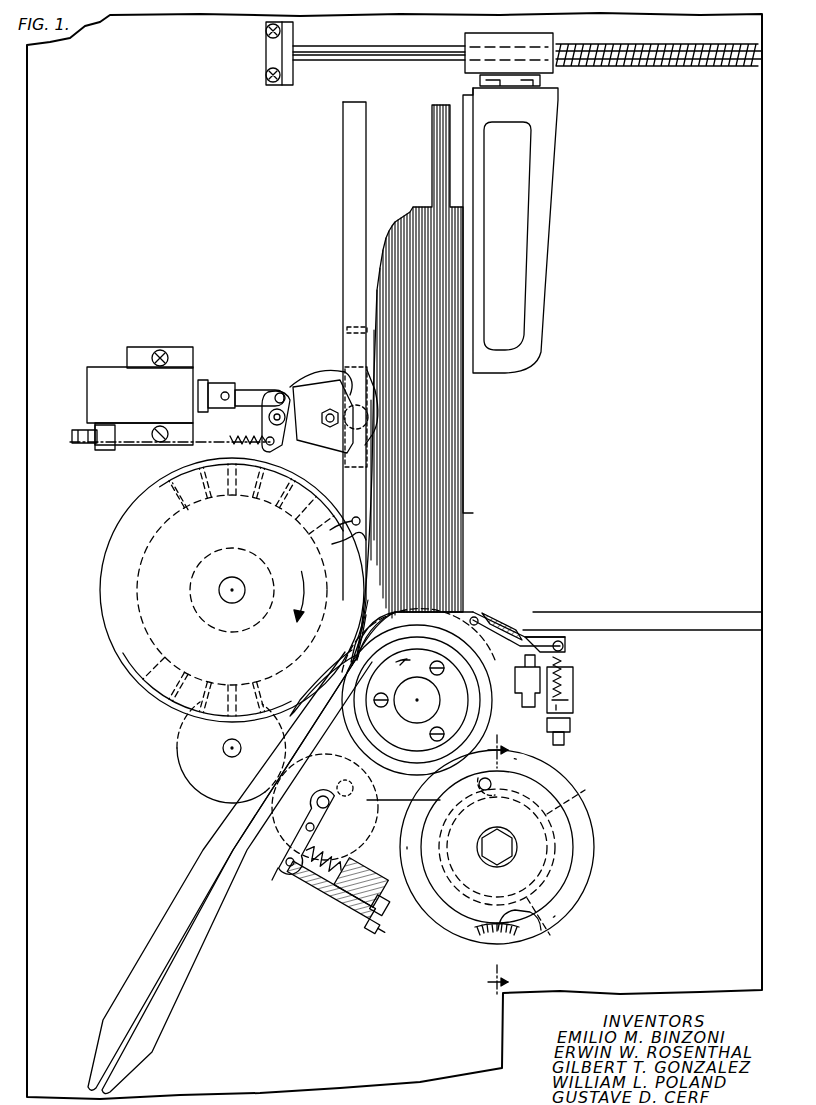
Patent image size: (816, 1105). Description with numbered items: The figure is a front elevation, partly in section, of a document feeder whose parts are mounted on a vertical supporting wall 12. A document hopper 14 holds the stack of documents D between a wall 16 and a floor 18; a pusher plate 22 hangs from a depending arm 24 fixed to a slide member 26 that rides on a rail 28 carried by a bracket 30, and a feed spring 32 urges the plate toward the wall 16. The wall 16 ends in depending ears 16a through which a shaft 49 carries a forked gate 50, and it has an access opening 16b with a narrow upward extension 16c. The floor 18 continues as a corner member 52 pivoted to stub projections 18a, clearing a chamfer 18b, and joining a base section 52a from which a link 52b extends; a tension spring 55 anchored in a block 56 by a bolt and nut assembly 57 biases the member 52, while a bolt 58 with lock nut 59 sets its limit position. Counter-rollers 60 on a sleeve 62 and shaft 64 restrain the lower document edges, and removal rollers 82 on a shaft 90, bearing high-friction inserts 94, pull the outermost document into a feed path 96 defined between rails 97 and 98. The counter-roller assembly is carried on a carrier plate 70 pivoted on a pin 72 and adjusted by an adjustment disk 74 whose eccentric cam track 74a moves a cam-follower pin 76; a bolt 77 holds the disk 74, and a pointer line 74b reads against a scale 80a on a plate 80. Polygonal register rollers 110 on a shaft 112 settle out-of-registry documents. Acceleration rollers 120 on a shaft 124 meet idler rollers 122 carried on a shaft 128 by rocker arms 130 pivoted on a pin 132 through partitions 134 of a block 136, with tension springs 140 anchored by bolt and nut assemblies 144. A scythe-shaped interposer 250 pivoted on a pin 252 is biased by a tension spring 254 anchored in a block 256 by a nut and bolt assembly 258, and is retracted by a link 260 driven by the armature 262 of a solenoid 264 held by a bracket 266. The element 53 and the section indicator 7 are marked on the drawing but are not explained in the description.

The supporting wall 12 is at (135, 95).
The document hopper 14 is at (340, 240).
The hopper wall 16 is at (343, 300).
The depending ears 16a is at (332, 544).
The access opening 16b is at (325, 410).
The upward extension of access opening 16c is at (347, 330).
The hopper floor 18 is at (688, 617).
The stub projections 18a is at (495, 622).
The chamfer of hopper floor 18b is at (530, 636).
The pusher plate 22 is at (462, 96).
The depending arm 24 is at (547, 153).
The slide member 26 is at (515, 32).
The rail 28 is at (412, 50).
The bracket 30 is at (266, 47).
The feed spring 32 is at (678, 44).
The shaft 49 is at (352, 522).
The forked gate 50 is at (305, 630).
The corner member 52 is at (430, 612).
The base section 52a is at (560, 637).
The link 52b is at (563, 646).
The pivot pin 53 is at (478, 618).
The tension spring 55 is at (565, 664).
The block 56 is at (574, 707).
The bolt and nut assembly 57 is at (566, 743).
The bolt 58 is at (572, 724).
The lock nut 59 is at (512, 684).
The counter-rollers 60 is at (490, 716).
The sleeve 62 is at (462, 668).
The rotatable shaft 64 is at (440, 706).
The carrier plate 70 is at (393, 802).
The pivot pin 72 is at (331, 810).
The adjustment disk 74 is at (594, 846).
The circular cam track 74a is at (590, 808).
The pointer line 74b is at (540, 932).
The cam-follower pin 76 is at (520, 782).
The bolt 77 is at (512, 848).
The plate 80 is at (580, 890).
The scale 80a is at (484, 935).
The removal rollers 82 is at (122, 520).
The rotatable shaft 90 is at (228, 602).
The friction inserts 94 is at (322, 500).
The feed path 96 is at (288, 740).
The rails 97 is at (182, 886).
The rails 98 is at (208, 957).
The polygonal register rollers 110 is at (336, 378).
The rotatable shaft 112 is at (326, 430).
The acceleration rollers 120 is at (200, 790).
The idler rollers 122 is at (385, 772).
The shaft 124 is at (224, 753).
The shaft 128 is at (352, 785).
The rocker arms 130 is at (340, 840).
The pin 132 is at (280, 872).
The partitions 134 is at (392, 905).
The block 136 is at (392, 898).
The tension springs 140 is at (318, 900).
The bolt and nut assemblies 144 is at (370, 922).
The scythe-shaped interposer 250 is at (292, 380).
The pin 252 is at (285, 444).
The tension spring 254 is at (236, 440).
The block 256 is at (100, 452).
The nut and bolt assembly 258 is at (78, 444).
The link 260 is at (252, 389).
The armature 262 is at (203, 379).
The solenoid 264 is at (98, 366).
The bracket 266 is at (182, 346).
The section line 7 is at (506, 866).
The documents D is at (426, 180).